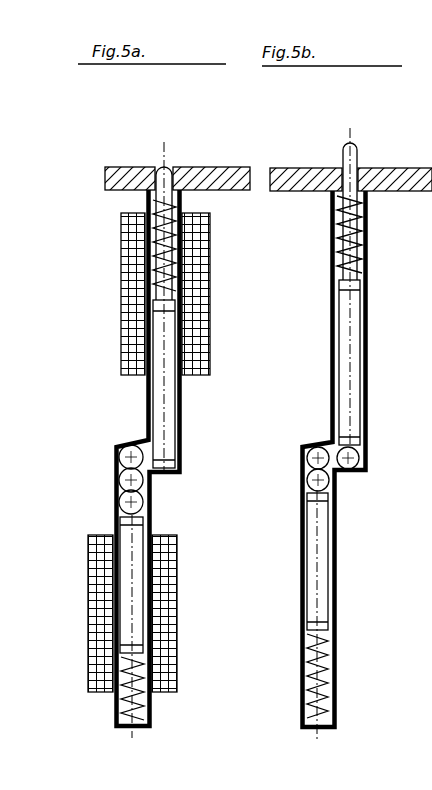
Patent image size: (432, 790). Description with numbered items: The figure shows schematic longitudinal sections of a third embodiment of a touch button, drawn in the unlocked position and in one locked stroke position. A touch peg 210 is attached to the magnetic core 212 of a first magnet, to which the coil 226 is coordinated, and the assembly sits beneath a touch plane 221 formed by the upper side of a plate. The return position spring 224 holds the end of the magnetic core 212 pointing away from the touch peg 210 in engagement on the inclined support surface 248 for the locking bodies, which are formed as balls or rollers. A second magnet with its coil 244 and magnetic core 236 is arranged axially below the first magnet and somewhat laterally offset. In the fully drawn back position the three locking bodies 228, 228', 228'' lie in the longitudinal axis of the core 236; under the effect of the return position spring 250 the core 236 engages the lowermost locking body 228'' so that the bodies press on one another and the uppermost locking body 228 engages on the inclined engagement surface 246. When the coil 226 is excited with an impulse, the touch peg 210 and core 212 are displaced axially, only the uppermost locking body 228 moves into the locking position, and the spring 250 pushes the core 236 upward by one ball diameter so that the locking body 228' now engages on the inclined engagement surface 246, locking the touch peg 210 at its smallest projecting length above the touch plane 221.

In FIG. 5A, the touch peg 210 is at (163, 168).
In FIG. 5B, the touch peg 210 is at (347, 158).
In FIG. 5A, the touch plane 221 is at (226, 167).
In FIG. 5B, the touch plane 221 is at (283, 167).
In FIG. 5A, the return position spring 224 is at (170, 238).
In FIG. 5B, the return position spring 224 is at (352, 222).
In FIG. 5A, the coil 226 is at (200, 314).
In FIG. 5A, the magnetic core 212 is at (172, 402).
In FIG. 5B, the magnetic core 212 is at (343, 342).
In FIG. 5A, the inclined engagement surface 246 is at (140, 440).
In FIG. 5B, the inclined engagement surface 246 is at (326, 441).
In FIG. 5A, the locking body 228 is at (82, 449).
In FIG. 5B, the locking body 228 is at (374, 451).
In FIG. 5A, the locking body 228' is at (81, 473).
In FIG. 5B, the locking body 228' is at (287, 450).
In FIG. 5A, the locking body 228'' is at (81, 497).
In FIG. 5B, the locking body 228'' is at (287, 473).
In FIG. 5A, the inclined support surface 248 is at (168, 473).
In FIG. 5B, the inclined support surface 248 is at (348, 473).
In FIG. 5A, the magnetic core 236 is at (145, 572).
In FIG. 5B, the magnetic core 236 is at (320, 553).
In FIG. 5A, the coil 244 is at (162, 608).
In FIG. 5A, the return position spring 250 is at (138, 700).
In FIG. 5B, the return position spring 250 is at (326, 673).